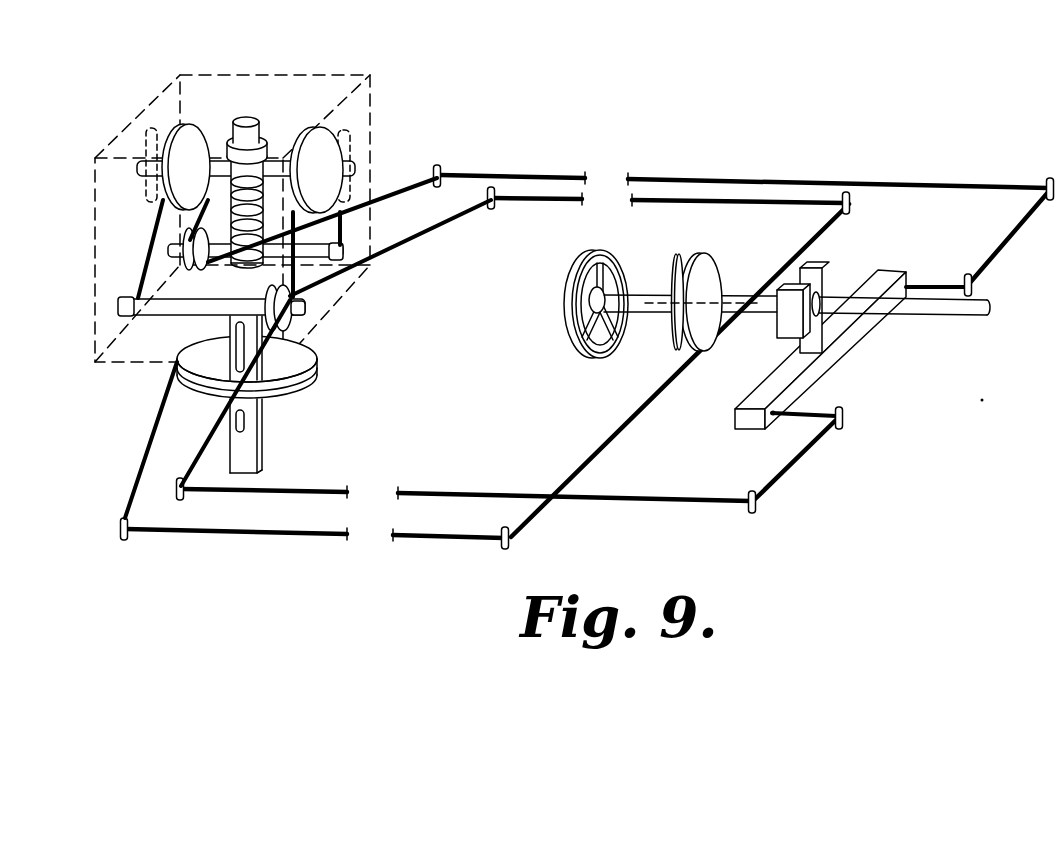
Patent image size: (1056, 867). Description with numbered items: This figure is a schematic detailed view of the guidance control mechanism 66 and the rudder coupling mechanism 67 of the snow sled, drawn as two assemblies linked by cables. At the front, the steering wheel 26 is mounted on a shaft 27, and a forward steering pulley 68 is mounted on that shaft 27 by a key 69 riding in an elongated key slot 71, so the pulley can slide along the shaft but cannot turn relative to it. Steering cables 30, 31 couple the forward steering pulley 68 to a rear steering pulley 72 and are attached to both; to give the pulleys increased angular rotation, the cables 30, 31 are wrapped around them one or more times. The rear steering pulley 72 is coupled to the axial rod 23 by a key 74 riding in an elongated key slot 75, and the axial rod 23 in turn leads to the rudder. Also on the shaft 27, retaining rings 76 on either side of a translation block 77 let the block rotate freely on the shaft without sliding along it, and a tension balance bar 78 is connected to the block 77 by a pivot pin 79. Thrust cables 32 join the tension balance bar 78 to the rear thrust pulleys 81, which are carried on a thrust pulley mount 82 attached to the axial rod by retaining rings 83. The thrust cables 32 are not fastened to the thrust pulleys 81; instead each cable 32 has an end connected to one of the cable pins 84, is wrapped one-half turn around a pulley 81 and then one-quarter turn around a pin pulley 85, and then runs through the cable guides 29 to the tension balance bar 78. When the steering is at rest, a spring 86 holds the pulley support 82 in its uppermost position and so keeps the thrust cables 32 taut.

The axial rod 23 is at (259, 458).
The steering wheel 26 is at (572, 292).
The shaft 27 is at (657, 314).
The cable guides 29 is at (441, 173).
The steering cable 30 is at (395, 538).
The steering cable 31 is at (632, 201).
The thrust cables 32 is at (586, 173).
The guidance control mechanism 66 is at (830, 152).
The rudder coupling mechanism 67 is at (104, 96).
The forward steering pulley 68 is at (697, 256).
The key 69 is at (718, 270).
The elongated key slot 71 is at (658, 294).
The rear steering pulley 72 is at (318, 362).
The key 74 is at (237, 372).
The elongated key slot 75 is at (245, 421).
The retaining rings 76 is at (779, 322).
The translation block 77 is at (822, 266).
The tension balance bar 78 is at (735, 426).
The pivot pin 79 is at (804, 345).
The rear thrust pulleys 81 is at (190, 124).
The thrust pulley mount 82 is at (268, 150).
The retaining rings 83 is at (226, 152).
The cable pins 84 is at (310, 307).
The pin pulley 85 is at (202, 271).
The spring 86 is at (228, 206).